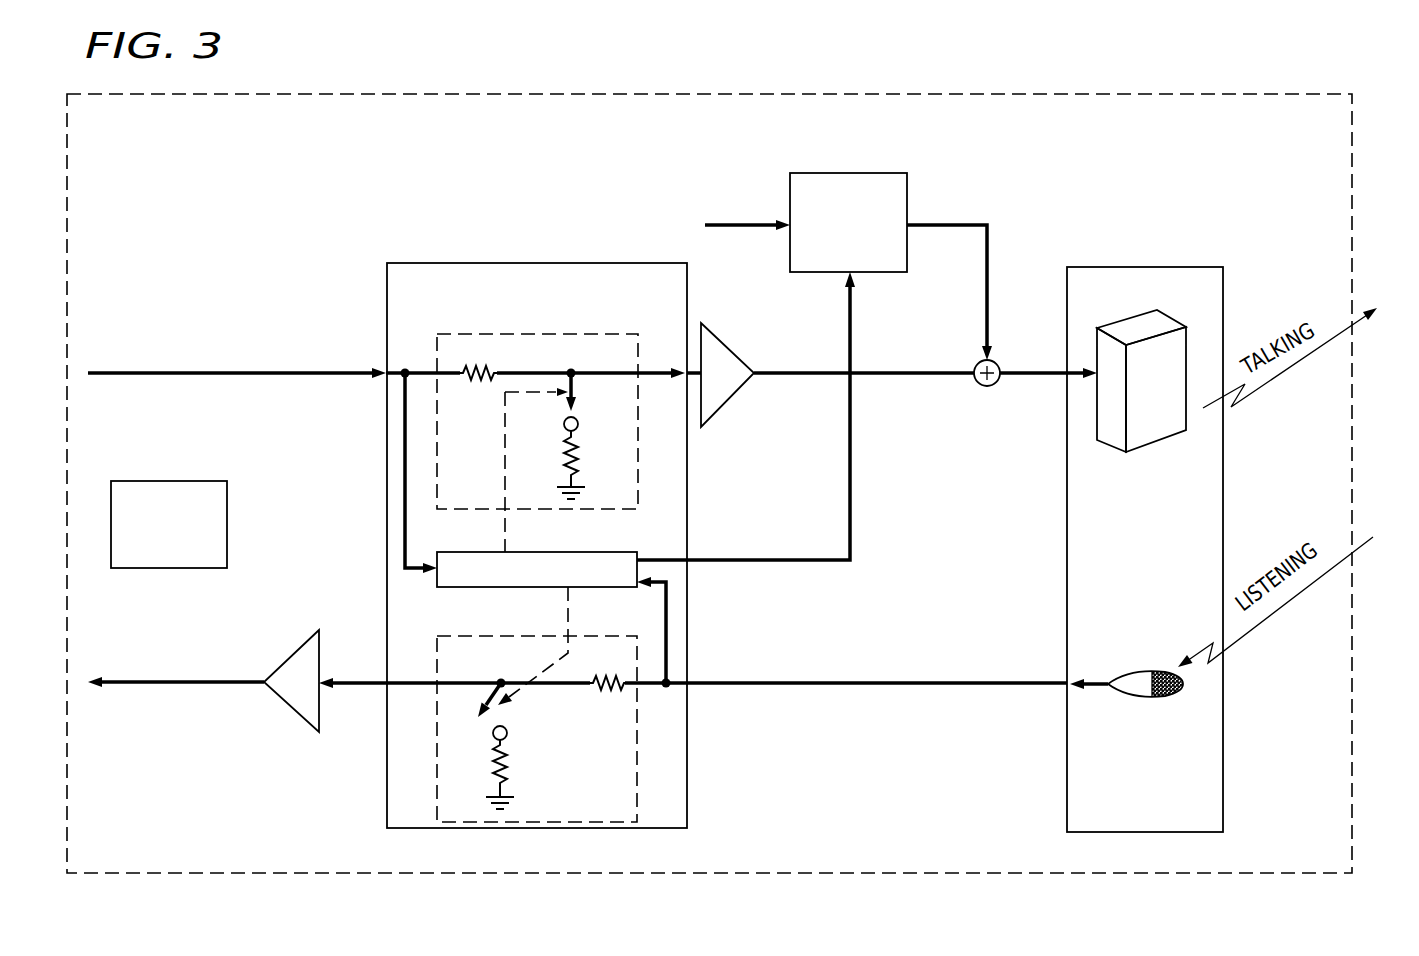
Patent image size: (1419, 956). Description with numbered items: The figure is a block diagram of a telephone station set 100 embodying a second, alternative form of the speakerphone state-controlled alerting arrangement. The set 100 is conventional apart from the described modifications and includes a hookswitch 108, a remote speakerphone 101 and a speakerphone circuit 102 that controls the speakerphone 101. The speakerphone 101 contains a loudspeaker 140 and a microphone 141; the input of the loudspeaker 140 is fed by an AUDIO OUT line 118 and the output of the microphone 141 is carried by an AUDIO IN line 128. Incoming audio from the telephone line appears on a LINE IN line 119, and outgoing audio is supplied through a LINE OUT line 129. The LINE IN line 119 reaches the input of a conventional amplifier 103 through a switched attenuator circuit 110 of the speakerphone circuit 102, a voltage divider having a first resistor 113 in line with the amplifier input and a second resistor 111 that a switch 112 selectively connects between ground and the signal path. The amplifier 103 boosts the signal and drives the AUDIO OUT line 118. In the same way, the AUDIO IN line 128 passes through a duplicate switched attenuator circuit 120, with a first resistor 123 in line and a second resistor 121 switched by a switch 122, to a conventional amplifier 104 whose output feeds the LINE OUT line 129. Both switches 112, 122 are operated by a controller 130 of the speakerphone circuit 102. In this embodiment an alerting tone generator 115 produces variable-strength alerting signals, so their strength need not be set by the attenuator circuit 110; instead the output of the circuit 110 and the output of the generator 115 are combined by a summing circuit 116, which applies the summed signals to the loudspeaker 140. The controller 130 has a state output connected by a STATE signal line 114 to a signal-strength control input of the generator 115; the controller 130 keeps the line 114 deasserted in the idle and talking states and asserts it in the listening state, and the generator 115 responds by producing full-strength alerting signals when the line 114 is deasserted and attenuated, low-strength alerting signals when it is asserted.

The telephone station set 100 is at (709, 483).
The speakerphone 101 is at (1130, 267).
The speakerphone circuit 102 is at (544, 545).
The amplifier 103 is at (722, 338).
The amplifier 104 is at (294, 652).
The hookswitch 108 is at (192, 481).
The switched attenuator circuit 110 is at (434, 370).
The second resistor 111 is at (585, 460).
The switch 112 is at (578, 395).
The first resistor 113 is at (481, 366).
The STATE signal line 114 is at (852, 323).
The alerting tone generator 115 is at (862, 172).
The summing circuit 116 is at (987, 387).
The AUDIO OUT line 118 is at (802, 377).
The LINE IN line 119 is at (274, 396).
The switched attenuator circuit 120 is at (495, 635).
The second resistor 121 is at (512, 757).
The switch 122 is at (478, 706).
The first resistor 123 is at (596, 690).
The AUDIO IN line 128 is at (846, 646).
The LINE OUT line 129 is at (176, 708).
The controller 130 is at (597, 552).
The loudspeaker 140 is at (1112, 448).
The microphone 141 is at (1138, 673).